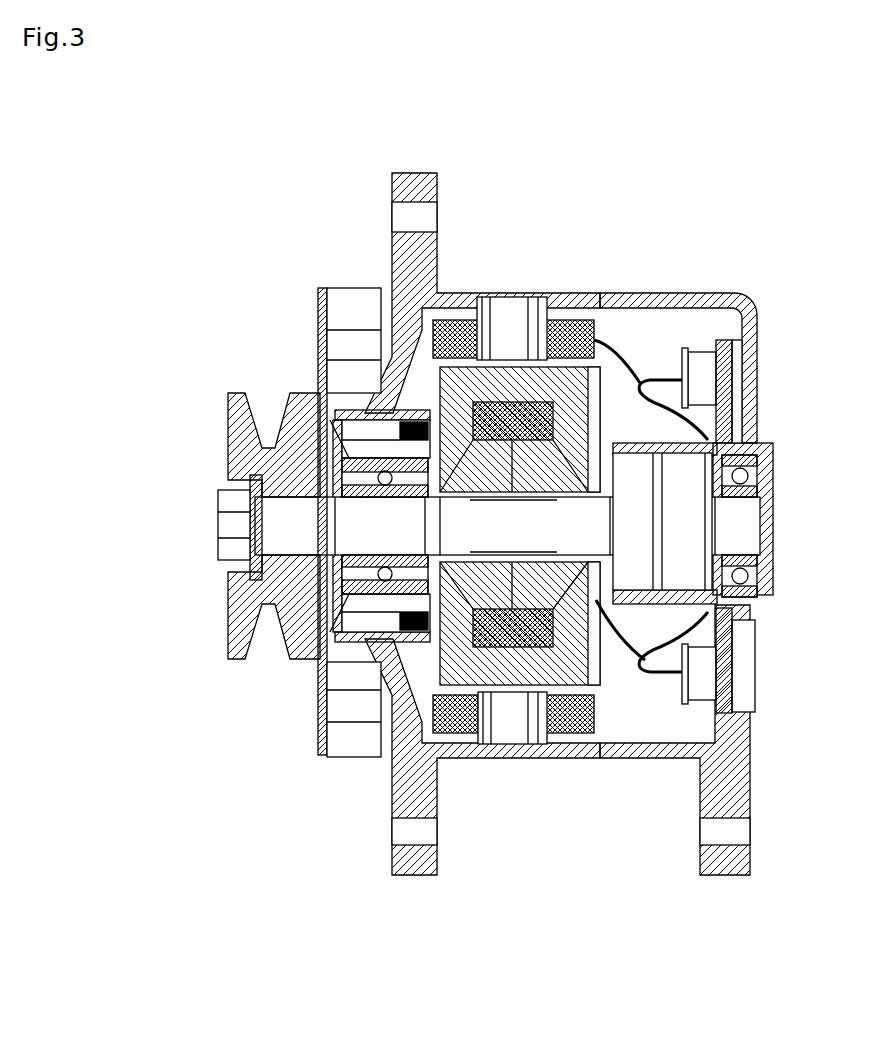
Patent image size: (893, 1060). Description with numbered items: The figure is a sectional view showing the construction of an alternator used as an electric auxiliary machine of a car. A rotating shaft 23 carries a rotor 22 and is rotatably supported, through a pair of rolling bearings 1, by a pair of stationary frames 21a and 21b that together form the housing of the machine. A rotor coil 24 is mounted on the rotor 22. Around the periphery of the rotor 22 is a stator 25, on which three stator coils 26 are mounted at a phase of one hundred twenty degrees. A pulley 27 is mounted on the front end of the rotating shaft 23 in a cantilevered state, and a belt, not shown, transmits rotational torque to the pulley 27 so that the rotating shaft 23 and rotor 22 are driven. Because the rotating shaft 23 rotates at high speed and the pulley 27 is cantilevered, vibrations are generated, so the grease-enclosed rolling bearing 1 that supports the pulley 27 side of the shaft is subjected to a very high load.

The rolling bearing 1 is at (370, 443).
The stationary frame 21a is at (432, 872).
The stationary frame 21b is at (740, 872).
The rotor 22 is at (632, 378).
The rotating shaft 23 is at (312, 512).
The rotor coil 24 is at (556, 395).
The stator 25 is at (456, 322).
The stator coil 26 is at (510, 312).
The pulley 27 is at (230, 458).